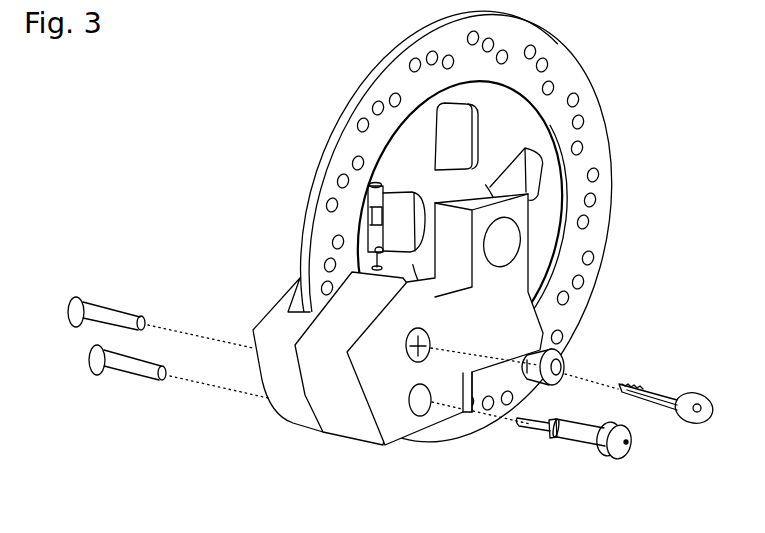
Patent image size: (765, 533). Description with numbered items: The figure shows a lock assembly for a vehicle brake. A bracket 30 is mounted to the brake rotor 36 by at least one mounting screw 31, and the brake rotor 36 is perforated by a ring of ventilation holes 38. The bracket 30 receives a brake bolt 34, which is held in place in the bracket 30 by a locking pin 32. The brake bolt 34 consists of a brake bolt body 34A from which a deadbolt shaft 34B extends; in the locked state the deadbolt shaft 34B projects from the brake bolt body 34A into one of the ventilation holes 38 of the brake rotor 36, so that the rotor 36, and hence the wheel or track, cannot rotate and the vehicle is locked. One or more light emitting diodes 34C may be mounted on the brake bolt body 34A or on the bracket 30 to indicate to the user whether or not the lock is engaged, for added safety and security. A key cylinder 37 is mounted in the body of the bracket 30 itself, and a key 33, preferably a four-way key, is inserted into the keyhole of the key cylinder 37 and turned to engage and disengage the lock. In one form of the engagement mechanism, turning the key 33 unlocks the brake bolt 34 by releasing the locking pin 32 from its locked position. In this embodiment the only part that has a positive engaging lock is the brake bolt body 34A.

The bracket 30 is at (383, 348).
The mounting screw 31 is at (152, 370).
The locking pin 32 is at (369, 233).
The key 33 is at (683, 413).
The brake bolt 34 is at (584, 472).
The brake bolt body 34A is at (577, 435).
The deadbolt shaft 34B is at (535, 430).
The light emitting diode 34C is at (638, 472).
The brake rotor 36 is at (474, 238).
The key cylinder 37 is at (408, 358).
The ventilation hole 38 is at (409, 63).